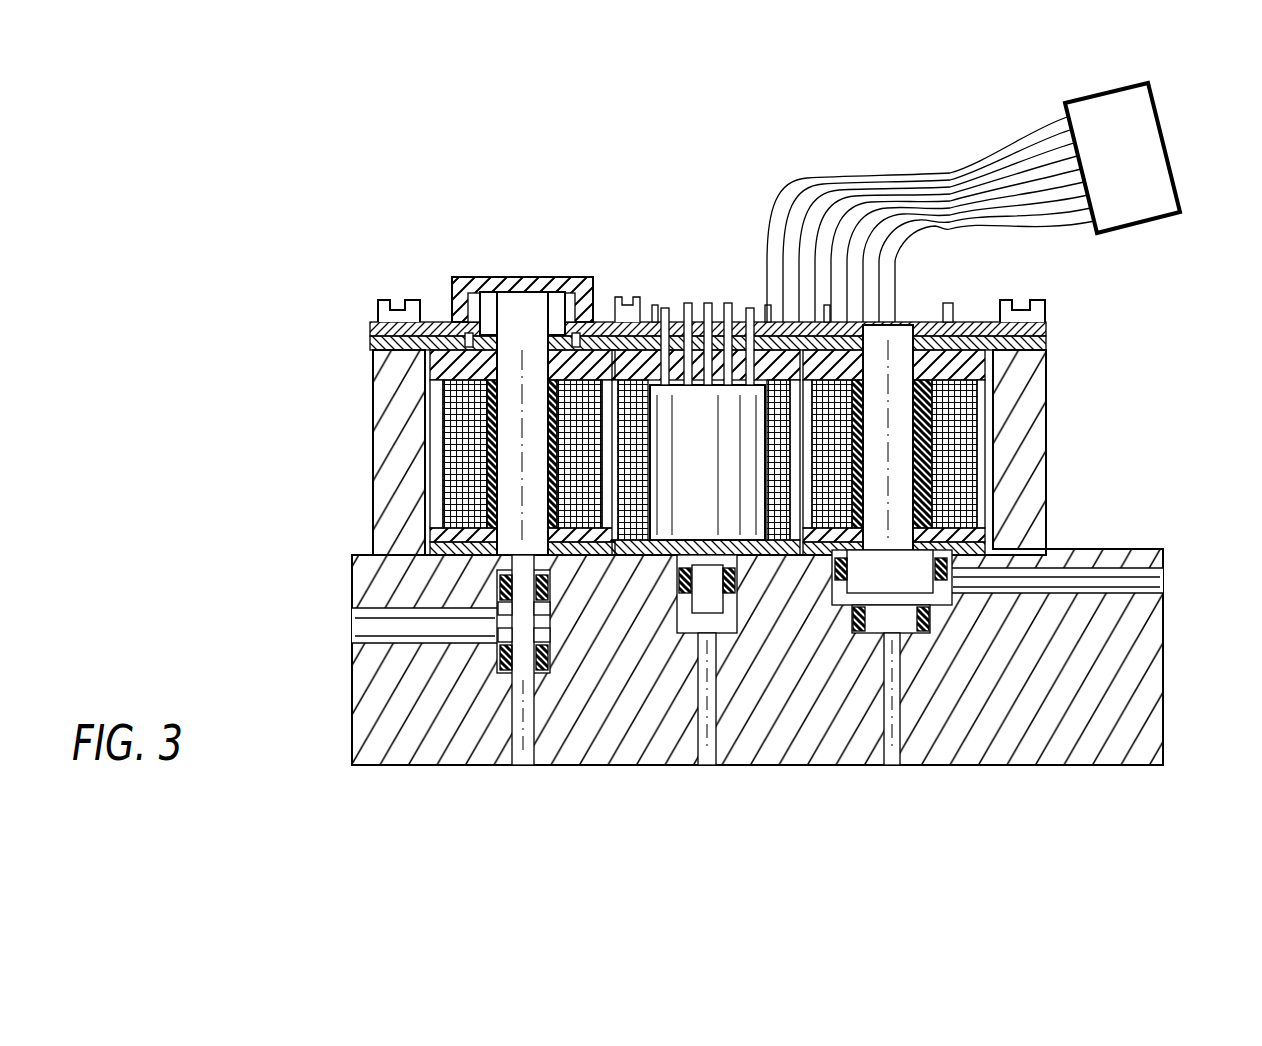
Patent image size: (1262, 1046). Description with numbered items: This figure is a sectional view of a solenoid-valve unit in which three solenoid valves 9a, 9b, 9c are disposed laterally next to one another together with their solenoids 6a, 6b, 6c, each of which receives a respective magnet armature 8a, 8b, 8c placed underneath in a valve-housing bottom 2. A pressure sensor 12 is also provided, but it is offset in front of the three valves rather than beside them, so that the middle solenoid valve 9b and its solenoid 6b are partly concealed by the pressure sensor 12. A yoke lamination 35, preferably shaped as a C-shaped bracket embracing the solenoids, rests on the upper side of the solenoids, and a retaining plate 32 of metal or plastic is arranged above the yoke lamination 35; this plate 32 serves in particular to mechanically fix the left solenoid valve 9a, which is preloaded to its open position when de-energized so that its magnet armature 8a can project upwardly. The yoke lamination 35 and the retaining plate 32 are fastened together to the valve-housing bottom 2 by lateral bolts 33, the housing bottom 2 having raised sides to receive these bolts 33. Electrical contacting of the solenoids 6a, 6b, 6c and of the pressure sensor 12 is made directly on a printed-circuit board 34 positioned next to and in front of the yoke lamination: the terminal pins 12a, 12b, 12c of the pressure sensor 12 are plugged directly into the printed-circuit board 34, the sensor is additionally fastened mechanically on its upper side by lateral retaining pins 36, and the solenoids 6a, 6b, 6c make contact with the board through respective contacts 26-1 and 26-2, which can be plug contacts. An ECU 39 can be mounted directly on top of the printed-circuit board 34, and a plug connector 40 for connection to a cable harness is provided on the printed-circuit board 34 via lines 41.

The valve-housing bottom 2 is at (1110, 706).
The solenoid 6a is at (447, 473).
The solenoid 6b is at (622, 507).
The solenoid 6c is at (977, 472).
The magnet armature 8a is at (513, 427).
The magnet armature 8b is at (700, 540).
The magnet armature 8c is at (973, 428).
The solenoid valve 9a is at (467, 459).
The solenoid valve 9b is at (685, 462).
The solenoid valve 9c is at (958, 441).
The pressure sensor 12 is at (760, 500).
The terminal pin 12a is at (665, 303).
The terminal pin 12b is at (708, 300).
The terminal pin 12c is at (728, 300).
The contact 26-1 is at (487, 300).
The contact 26-2 is at (571, 300).
The retaining plate 32 is at (1048, 323).
The bolt 33 is at (378, 312).
The printed-circuit board 34 is at (599, 300).
The yoke lamination 35 is at (1030, 345).
The retaining pin 36 is at (688, 300).
The ECU 39 is at (624, 298).
The plug connector 40 is at (1168, 156).
The line 41 is at (1032, 233).